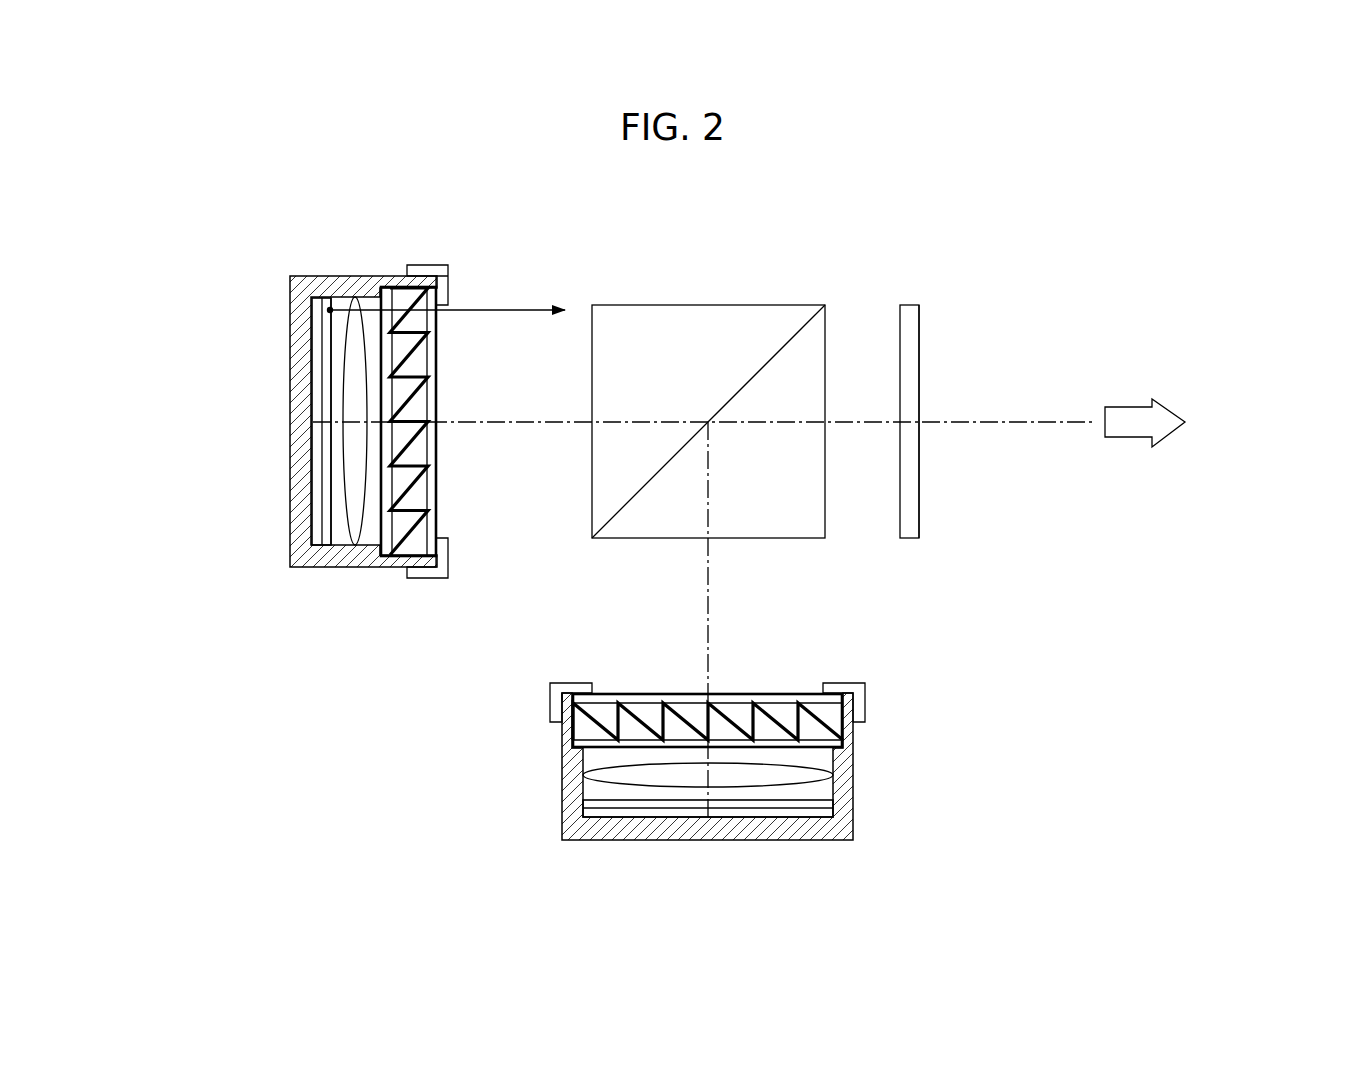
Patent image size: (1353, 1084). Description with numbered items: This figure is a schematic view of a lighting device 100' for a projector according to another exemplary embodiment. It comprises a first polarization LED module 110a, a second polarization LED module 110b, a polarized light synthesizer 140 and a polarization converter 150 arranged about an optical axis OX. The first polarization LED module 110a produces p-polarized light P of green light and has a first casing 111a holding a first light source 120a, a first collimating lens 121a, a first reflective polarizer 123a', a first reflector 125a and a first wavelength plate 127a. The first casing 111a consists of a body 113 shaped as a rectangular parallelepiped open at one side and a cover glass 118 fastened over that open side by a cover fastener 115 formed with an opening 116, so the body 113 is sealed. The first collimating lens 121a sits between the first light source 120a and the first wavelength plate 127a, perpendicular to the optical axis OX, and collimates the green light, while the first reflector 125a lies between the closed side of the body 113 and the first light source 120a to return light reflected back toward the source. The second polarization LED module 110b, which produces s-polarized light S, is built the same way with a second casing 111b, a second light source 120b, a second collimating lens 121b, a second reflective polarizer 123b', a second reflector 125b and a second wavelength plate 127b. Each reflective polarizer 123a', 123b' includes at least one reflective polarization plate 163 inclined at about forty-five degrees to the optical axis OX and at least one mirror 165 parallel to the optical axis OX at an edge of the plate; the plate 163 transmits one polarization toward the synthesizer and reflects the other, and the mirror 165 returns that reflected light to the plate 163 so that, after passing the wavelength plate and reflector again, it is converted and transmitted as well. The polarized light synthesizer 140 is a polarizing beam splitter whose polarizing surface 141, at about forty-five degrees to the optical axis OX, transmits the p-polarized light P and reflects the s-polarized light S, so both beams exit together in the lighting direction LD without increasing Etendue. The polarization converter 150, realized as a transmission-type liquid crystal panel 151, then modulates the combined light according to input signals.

The lighting device 100' is at (135, 218).
The first polarization LED module 110a is at (302, 266).
The second polarization LED module 110b is at (539, 838).
The first casing 111a is at (286, 400).
The second casing 111b is at (557, 803).
The body 113 is at (291, 300).
The cover fastener 115 is at (423, 265).
The opening 116 is at (448, 295).
The cover glass 118 is at (437, 550).
The first light source 120a is at (327, 547).
The second light source 120b is at (833, 806).
The first collimating lens 121a is at (370, 547).
The second collimating lens 121b is at (815, 766).
The first reflective polarizer 123a' is at (462, 421).
The second reflective polarizer 123b' is at (708, 682).
The first reflector 125a is at (317, 440).
The second reflector 125b is at (697, 817).
The first wavelength plate 127a is at (387, 549).
The second wavelength plate 127b is at (832, 743).
The polarized light synthesizer 140 is at (707, 301).
The polarizing surface 141 is at (778, 350).
The polarization converter 150 is at (903, 301).
The transmission-type liquid crystal panel 151 is at (919, 492).
The reflective polarization plate 163 is at (400, 382).
The mirror 165 is at (392, 390).
The s-polarized light S is at (398, 268).
The p-polarized light P is at (456, 310).
The optical axis OX is at (1003, 420).
The lighting direction LD is at (1187, 422).